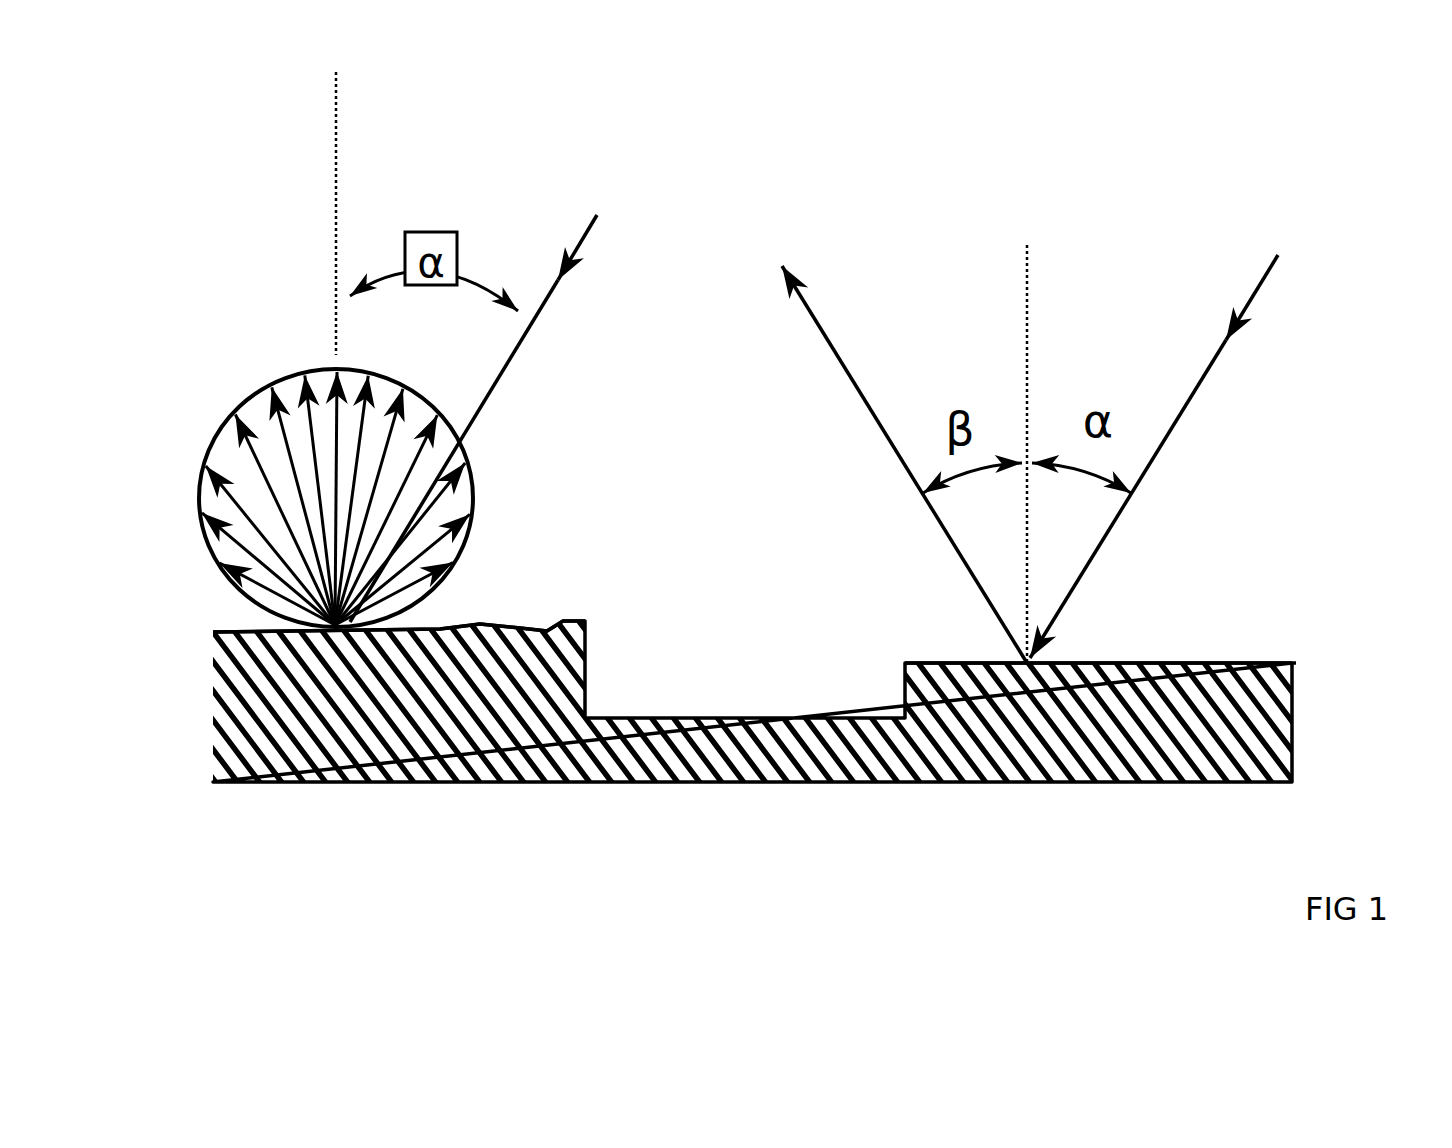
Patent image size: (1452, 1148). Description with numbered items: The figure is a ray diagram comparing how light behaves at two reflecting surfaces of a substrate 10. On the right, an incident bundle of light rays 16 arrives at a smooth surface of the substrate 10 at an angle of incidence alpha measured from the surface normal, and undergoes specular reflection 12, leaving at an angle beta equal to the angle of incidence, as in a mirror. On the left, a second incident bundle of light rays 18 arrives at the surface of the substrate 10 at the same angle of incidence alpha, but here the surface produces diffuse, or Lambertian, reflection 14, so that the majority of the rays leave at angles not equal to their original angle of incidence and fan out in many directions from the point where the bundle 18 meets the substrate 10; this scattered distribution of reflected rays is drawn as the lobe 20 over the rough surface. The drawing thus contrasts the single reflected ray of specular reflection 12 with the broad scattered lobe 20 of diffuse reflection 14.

The substrate 10 is at (1307, 707).
The specular reflection 12 is at (1075, 660).
The diffuse reflection 14 is at (443, 617).
The incident bundle of light rays 16 is at (1280, 302).
The incident bundle of light rays 18 is at (530, 373).
The scattered light distribution 20 is at (222, 427).